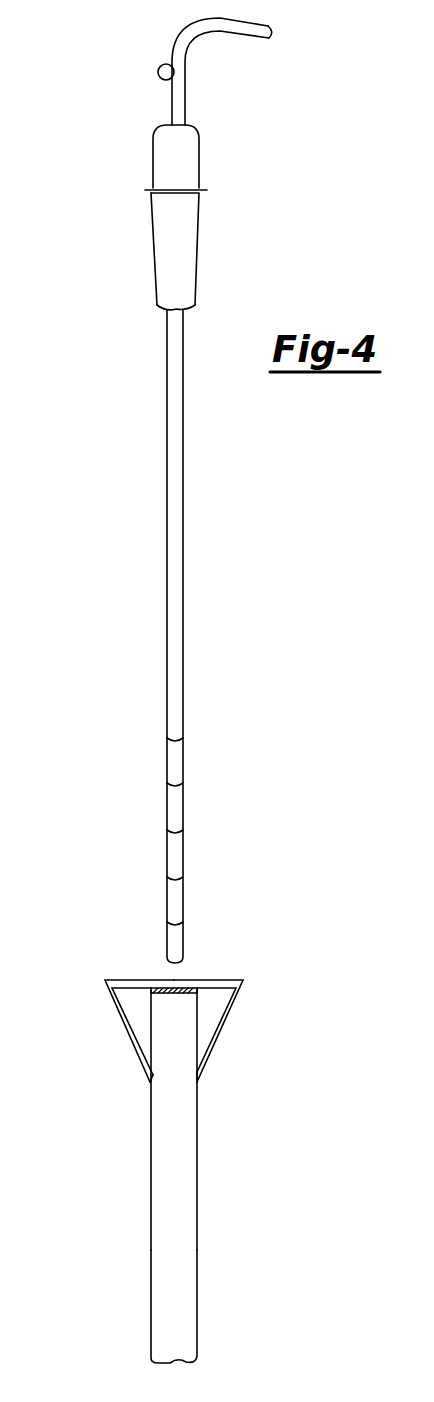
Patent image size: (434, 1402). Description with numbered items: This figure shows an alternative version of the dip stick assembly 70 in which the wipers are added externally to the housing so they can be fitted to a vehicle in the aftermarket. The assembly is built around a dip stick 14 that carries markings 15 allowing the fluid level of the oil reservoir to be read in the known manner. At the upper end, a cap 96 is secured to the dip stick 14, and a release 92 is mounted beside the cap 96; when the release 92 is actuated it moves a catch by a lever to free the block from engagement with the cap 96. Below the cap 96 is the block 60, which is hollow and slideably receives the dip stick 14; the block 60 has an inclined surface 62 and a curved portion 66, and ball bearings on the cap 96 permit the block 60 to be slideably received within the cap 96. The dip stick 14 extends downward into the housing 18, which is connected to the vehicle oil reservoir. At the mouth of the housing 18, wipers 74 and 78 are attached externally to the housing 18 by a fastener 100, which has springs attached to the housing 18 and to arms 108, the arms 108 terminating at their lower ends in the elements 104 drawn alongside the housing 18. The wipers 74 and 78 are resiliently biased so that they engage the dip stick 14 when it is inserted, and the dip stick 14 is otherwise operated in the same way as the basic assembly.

The dip stick 14 is at (234, 636).
The markings 15 is at (211, 846).
The housing 18 is at (197, 1263).
The block 60 is at (199, 233).
The inclined surface 62 is at (153, 235).
The curved portion 66 is at (160, 311).
The dip stick assembly 70 is at (215, 492).
The wiper 74 is at (122, 978).
The wiper 78 is at (214, 978).
The release 92 is at (159, 70).
The cap 96 is at (199, 163).
The fastener 100 is at (218, 1175).
The funnel arm tips 104 is at (150, 1085).
The arms 108 is at (118, 1018).